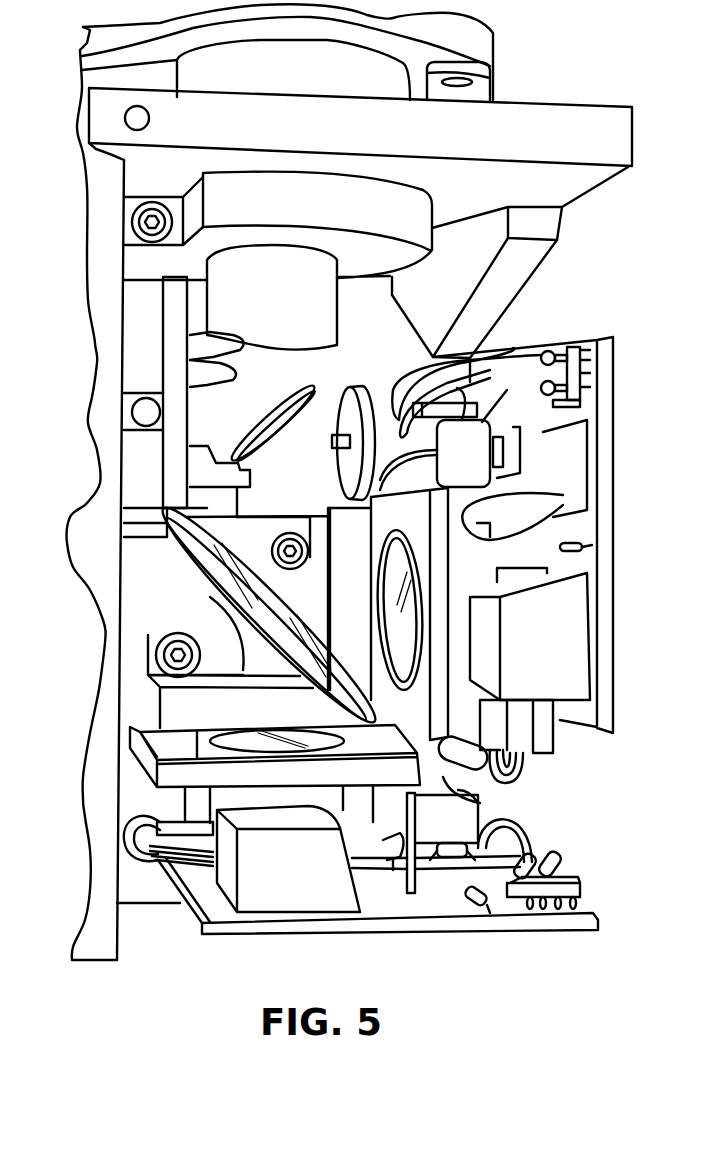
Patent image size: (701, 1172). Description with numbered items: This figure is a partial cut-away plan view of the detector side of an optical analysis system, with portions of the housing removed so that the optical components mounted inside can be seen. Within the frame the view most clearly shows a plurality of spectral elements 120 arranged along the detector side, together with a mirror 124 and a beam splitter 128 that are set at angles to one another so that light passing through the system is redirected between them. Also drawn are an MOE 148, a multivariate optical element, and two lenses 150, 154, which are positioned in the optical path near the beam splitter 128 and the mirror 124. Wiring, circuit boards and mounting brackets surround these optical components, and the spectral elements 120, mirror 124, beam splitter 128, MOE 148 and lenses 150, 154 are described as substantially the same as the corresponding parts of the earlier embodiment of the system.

The spectral elements 120 is at (131, 349).
The mirror 124 is at (273, 417).
The beam splitter 128 is at (212, 565).
The MOE 148 is at (260, 742).
The lens 150 is at (163, 772).
The lens 154 is at (420, 526).